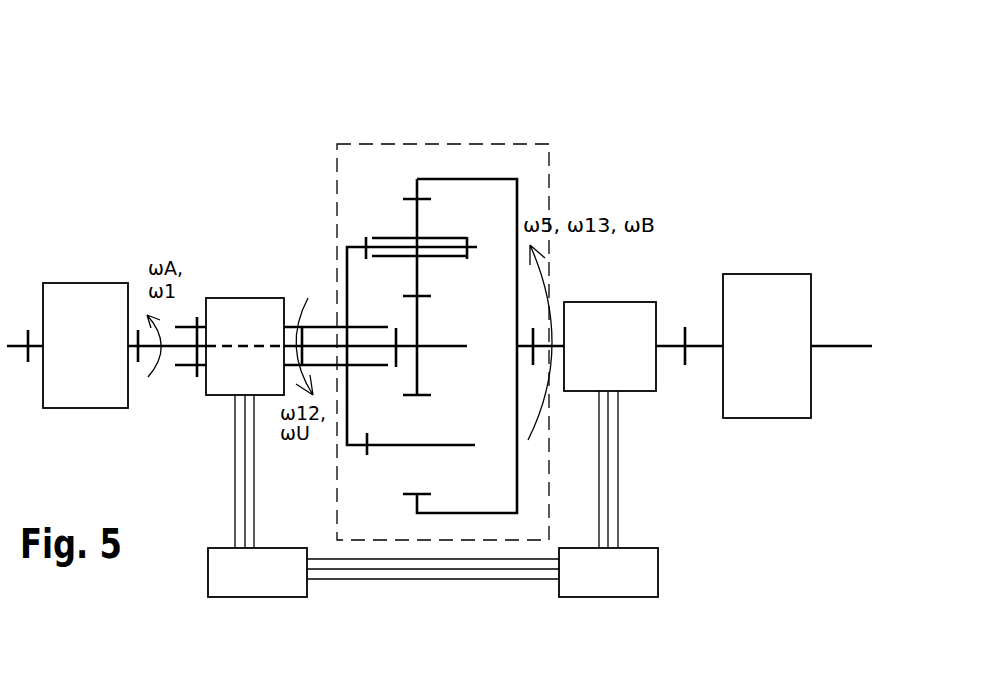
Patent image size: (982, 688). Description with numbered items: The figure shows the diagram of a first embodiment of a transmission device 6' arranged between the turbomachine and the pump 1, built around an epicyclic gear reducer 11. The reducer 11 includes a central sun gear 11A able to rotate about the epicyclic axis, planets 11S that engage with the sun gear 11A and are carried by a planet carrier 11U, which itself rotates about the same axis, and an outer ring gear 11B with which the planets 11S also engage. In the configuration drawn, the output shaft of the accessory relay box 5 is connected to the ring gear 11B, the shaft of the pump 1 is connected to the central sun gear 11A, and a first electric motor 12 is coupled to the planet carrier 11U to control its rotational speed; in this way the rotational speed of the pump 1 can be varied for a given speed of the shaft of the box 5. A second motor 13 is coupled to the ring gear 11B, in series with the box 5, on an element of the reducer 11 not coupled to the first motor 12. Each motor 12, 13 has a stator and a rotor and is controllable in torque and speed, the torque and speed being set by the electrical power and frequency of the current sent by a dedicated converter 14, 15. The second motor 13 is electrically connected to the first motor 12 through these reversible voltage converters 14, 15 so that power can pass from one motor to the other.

The hybrid drive train 6' is at (122, 64).
The pump 1 is at (83, 320).
The accessory relay box 5 is at (780, 303).
The epicyclic gear reducer 11 is at (382, 130).
The central sun gear 11A is at (417, 332).
The outer ring gear 11B is at (477, 178).
The planets 11S is at (417, 283).
The planet carrier 11U is at (343, 258).
The first electric motor 12 is at (242, 318).
The second motor 13 is at (638, 323).
The converter 14 is at (262, 580).
The converter 15 is at (597, 572).